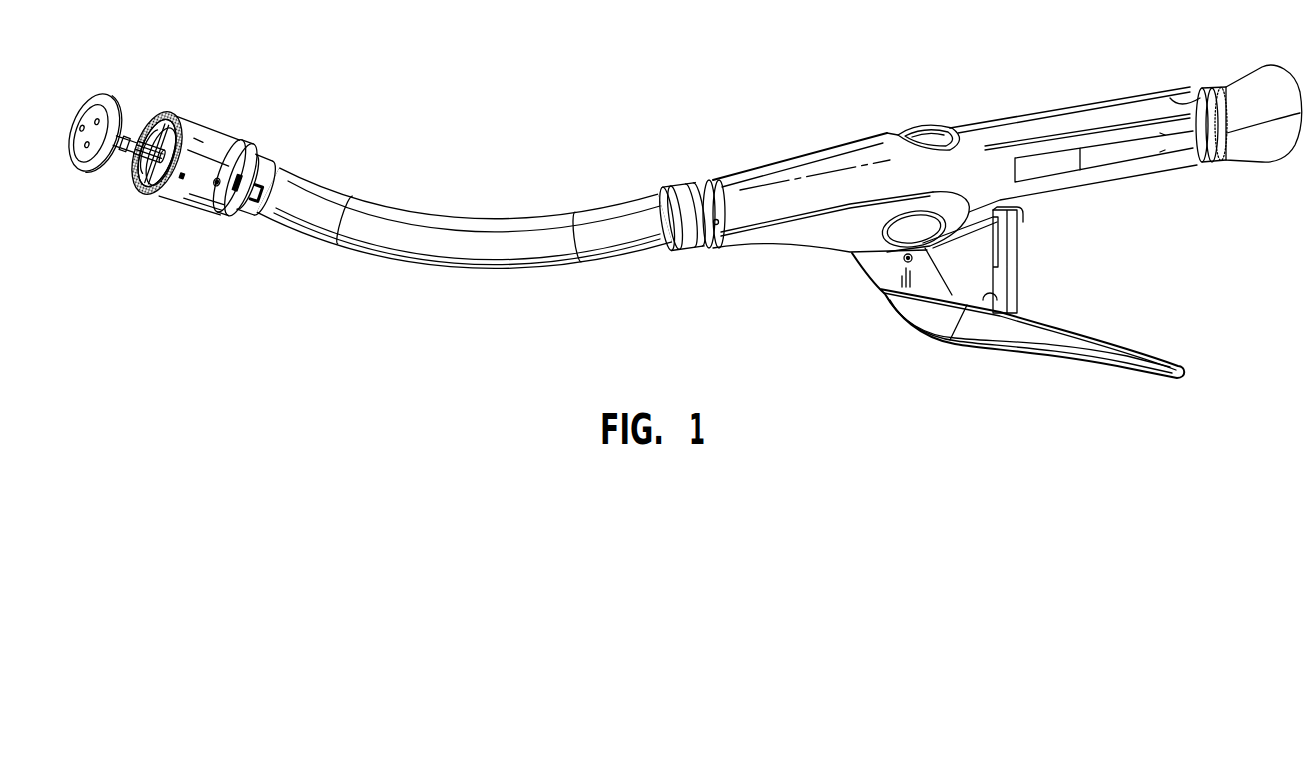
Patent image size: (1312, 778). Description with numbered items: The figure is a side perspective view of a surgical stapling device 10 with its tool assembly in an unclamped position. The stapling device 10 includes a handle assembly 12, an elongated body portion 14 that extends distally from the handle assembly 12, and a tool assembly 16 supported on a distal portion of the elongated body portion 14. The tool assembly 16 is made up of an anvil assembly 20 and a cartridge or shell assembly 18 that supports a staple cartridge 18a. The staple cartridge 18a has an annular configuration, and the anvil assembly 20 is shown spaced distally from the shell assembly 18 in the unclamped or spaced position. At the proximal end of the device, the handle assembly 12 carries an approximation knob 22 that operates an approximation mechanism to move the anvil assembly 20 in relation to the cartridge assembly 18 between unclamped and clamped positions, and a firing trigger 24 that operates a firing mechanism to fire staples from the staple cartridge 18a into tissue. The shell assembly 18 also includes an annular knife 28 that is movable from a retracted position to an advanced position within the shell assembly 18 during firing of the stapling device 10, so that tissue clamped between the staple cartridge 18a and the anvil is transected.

The surgical stapling device 10 is at (942, 74).
The handle assembly 12 is at (810, 243).
The elongated body portion 14 is at (454, 222).
The tool assembly 16 is at (165, 101).
The shell assembly 18 is at (181, 201).
The staple cartridge 18a is at (133, 186).
The anvil assembly 20 is at (97, 91).
The approximation knob 22 is at (1259, 80).
The firing trigger 24 is at (1088, 368).
The annular knife 28 is at (176, 117).